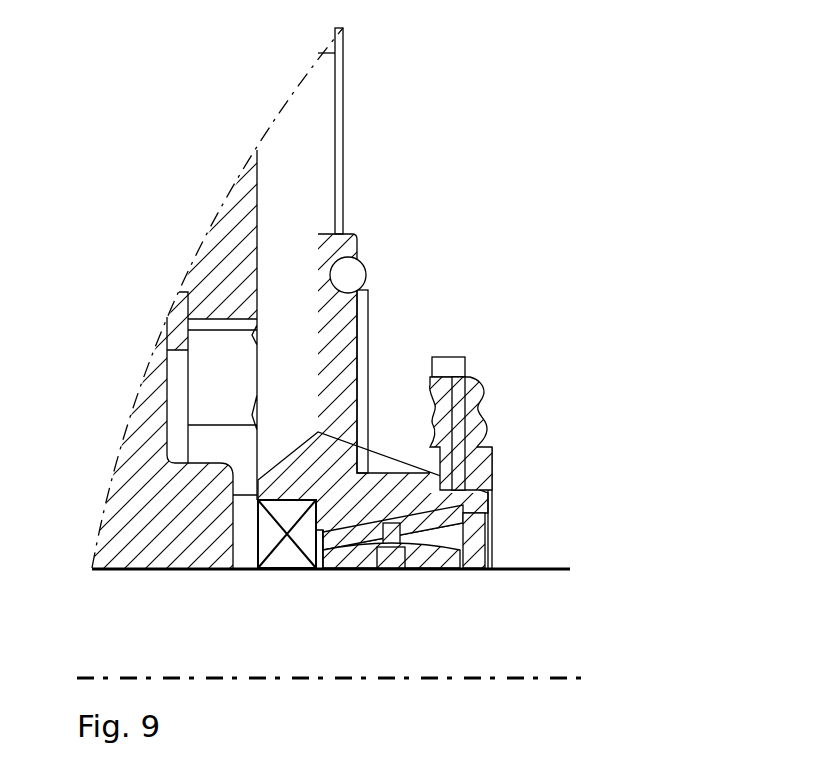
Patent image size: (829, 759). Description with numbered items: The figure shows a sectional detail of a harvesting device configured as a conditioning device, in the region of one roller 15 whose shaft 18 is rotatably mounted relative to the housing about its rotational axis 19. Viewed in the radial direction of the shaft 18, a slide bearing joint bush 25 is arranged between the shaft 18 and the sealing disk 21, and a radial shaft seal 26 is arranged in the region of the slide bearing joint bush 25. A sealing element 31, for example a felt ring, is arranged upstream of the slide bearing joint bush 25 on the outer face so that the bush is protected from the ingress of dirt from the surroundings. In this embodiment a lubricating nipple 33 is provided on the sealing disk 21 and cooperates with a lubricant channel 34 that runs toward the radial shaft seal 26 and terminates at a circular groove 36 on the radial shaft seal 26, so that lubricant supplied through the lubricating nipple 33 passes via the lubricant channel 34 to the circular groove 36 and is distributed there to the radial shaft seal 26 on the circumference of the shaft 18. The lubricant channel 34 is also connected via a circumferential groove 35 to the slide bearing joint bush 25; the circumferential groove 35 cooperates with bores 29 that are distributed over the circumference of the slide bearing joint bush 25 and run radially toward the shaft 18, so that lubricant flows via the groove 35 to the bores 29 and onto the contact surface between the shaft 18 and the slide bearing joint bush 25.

The roller 15 is at (241, 191).
The shaft 18 is at (553, 568).
The rotational axis 19 is at (558, 677).
The sealing disk 21 is at (461, 353).
The slide bearing joint bush 25 is at (362, 557).
The radial shaft seal 26 is at (284, 550).
The bores 29 is at (397, 557).
The sealing element 31 is at (476, 538).
The lubricating nipple 33 is at (472, 403).
The lubricant channel 34 is at (430, 512).
The circumferential groove 35 is at (391, 530).
The circular groove 36 is at (322, 542).